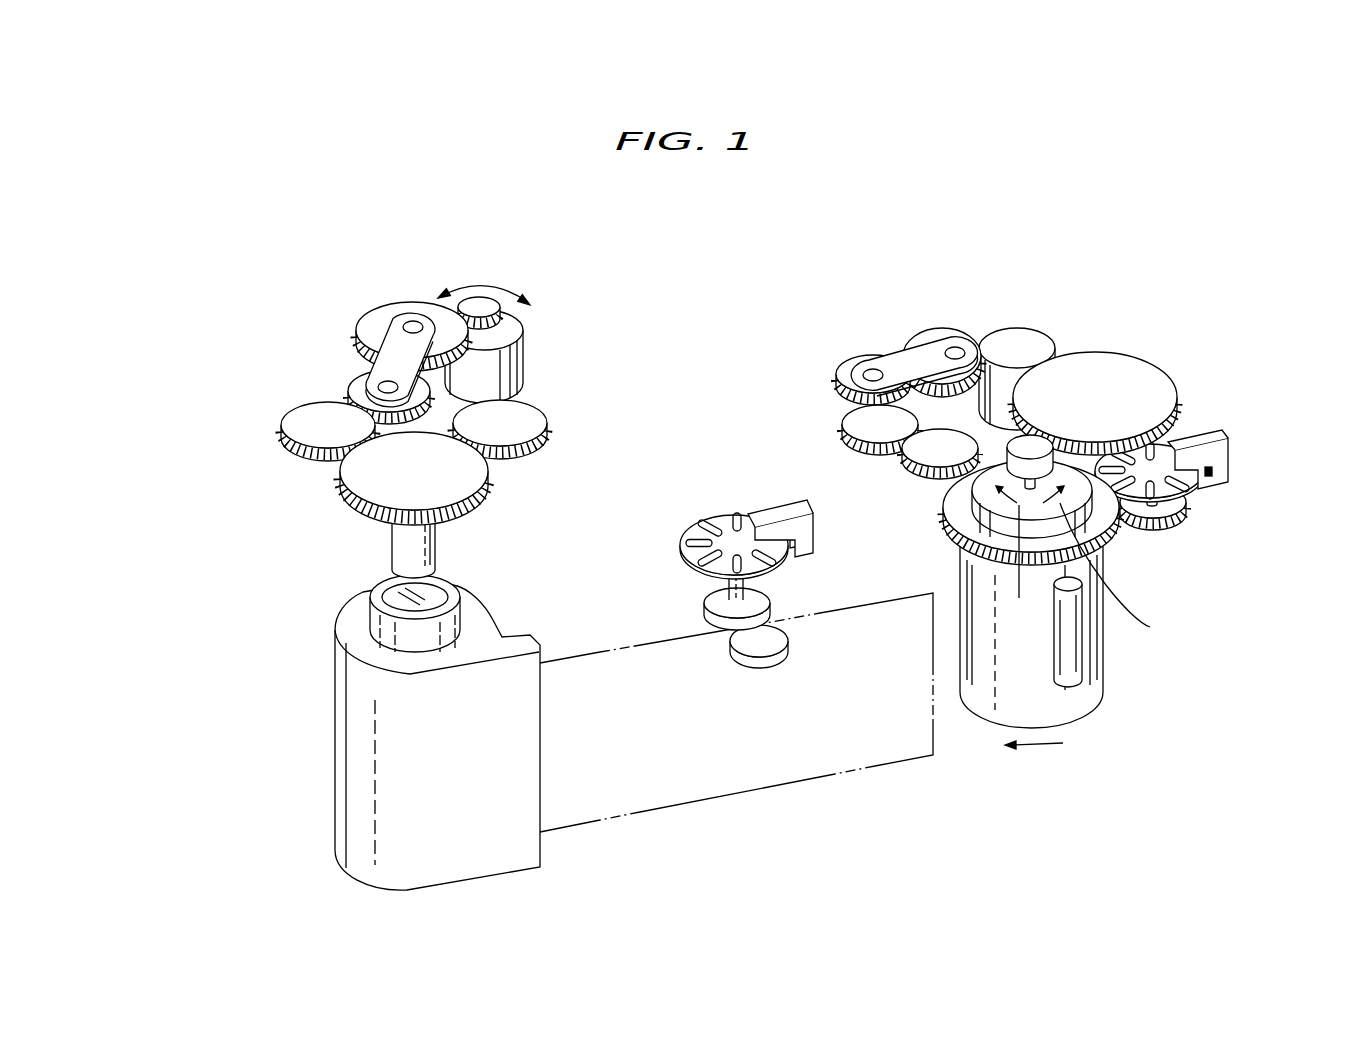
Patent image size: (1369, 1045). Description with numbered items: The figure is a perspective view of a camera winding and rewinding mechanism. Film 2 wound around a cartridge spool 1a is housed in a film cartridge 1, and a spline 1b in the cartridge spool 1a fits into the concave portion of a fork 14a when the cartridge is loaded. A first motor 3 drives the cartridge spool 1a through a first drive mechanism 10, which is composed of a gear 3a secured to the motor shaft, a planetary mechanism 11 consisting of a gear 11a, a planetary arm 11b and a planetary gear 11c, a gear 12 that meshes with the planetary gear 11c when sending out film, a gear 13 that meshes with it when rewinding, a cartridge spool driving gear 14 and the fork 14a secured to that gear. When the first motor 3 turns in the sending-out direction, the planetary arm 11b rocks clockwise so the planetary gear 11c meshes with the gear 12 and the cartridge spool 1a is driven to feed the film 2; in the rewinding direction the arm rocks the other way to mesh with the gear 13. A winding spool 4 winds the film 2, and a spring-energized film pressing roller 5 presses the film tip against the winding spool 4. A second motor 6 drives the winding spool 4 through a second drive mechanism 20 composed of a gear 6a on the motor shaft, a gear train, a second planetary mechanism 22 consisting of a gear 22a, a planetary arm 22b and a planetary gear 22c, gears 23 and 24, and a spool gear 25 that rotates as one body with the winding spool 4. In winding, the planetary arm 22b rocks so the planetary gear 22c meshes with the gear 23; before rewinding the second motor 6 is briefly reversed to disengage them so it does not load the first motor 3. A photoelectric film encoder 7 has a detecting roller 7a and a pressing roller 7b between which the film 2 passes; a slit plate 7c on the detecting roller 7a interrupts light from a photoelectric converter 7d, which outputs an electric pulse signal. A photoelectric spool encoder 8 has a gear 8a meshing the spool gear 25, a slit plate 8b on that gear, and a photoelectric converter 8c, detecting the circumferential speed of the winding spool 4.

The film cartridge 1 is at (483, 622).
The cartridge spool 1a is at (373, 627).
The spline 1b is at (393, 600).
The film 2 is at (878, 768).
The first motor 3 is at (513, 373).
The gear 3a is at (497, 308).
The winding spool 4 is at (1093, 673).
The film pressing roller 5 is at (1070, 687).
The second motor 6 is at (1087, 527).
The gear 6a is at (1040, 437).
The photoelectric film encoder 7 is at (798, 441).
The detecting roller 7a is at (760, 607).
The pressing roller 7b is at (776, 648).
The slit plate 7c is at (718, 517).
The photoelectric converter 7d is at (788, 508).
The photoelectric spool encoder 8 is at (1297, 425).
The gear 8a is at (1180, 513).
The slit plate 8b is at (1193, 488).
The photoelectric converter 8c is at (1223, 456).
The first drive mechanism 10 is at (236, 530).
The planetary mechanism 11 is at (413, 249).
The gear 11a is at (390, 304).
The planetary arm 11b is at (390, 347).
The planetary gear 11c is at (352, 383).
The gear 12 is at (300, 412).
The gear 13 is at (533, 428).
The cartridge spool driving gear 14 is at (478, 477).
The fork 14a is at (435, 540).
The second drive mechanism 20 is at (905, 197).
The second planetary mechanism 22 is at (1015, 261).
The gear 22a is at (947, 333).
The planetary arm 22b is at (890, 360).
The planetary gear 22c is at (840, 392).
The gear 23 is at (887, 455).
The gear 24 is at (928, 485).
The spool gear 25 is at (953, 543).